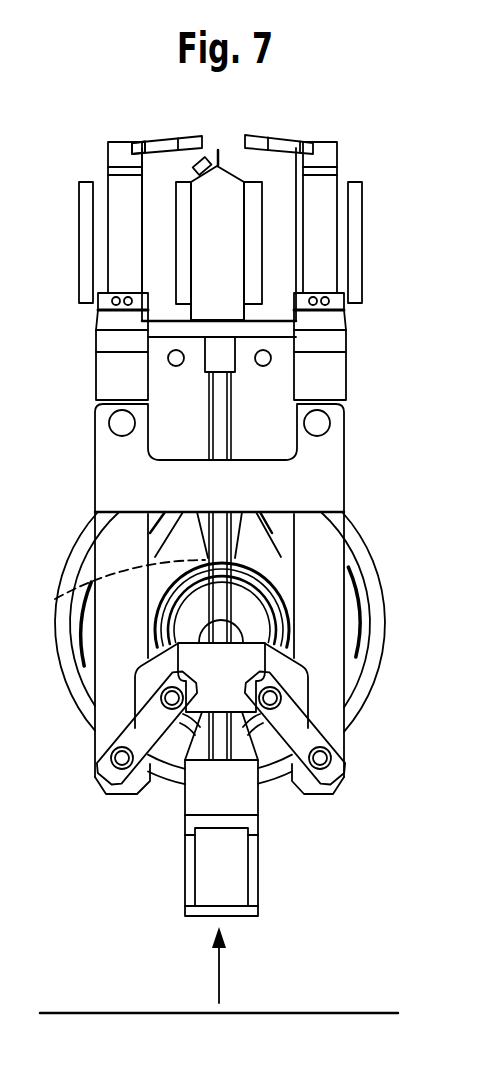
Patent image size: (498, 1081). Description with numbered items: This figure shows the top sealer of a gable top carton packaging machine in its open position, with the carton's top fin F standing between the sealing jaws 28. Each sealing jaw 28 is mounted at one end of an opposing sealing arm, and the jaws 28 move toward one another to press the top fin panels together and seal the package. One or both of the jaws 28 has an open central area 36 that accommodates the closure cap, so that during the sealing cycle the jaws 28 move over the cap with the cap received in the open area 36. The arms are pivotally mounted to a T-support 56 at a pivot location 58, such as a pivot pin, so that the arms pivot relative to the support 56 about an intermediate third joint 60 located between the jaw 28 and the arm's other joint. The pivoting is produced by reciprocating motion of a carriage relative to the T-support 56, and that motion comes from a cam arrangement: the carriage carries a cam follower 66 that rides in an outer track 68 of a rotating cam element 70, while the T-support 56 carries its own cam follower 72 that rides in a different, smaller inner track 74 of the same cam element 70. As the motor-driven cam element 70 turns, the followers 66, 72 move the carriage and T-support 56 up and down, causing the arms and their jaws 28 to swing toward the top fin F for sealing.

The sealing jaw 28 is at (201, 144).
The open central area 36 is at (168, 142).
The top fin F is at (220, 156).
The T-support 56 is at (224, 512).
The pivot location 58 is at (109, 426).
The third joint 60 is at (106, 441).
The cam follower 66 is at (216, 734).
The outer track 68 is at (368, 590).
The cam element 70 is at (377, 650).
The cam follower 72 is at (117, 581).
The inner track 74 is at (283, 588).